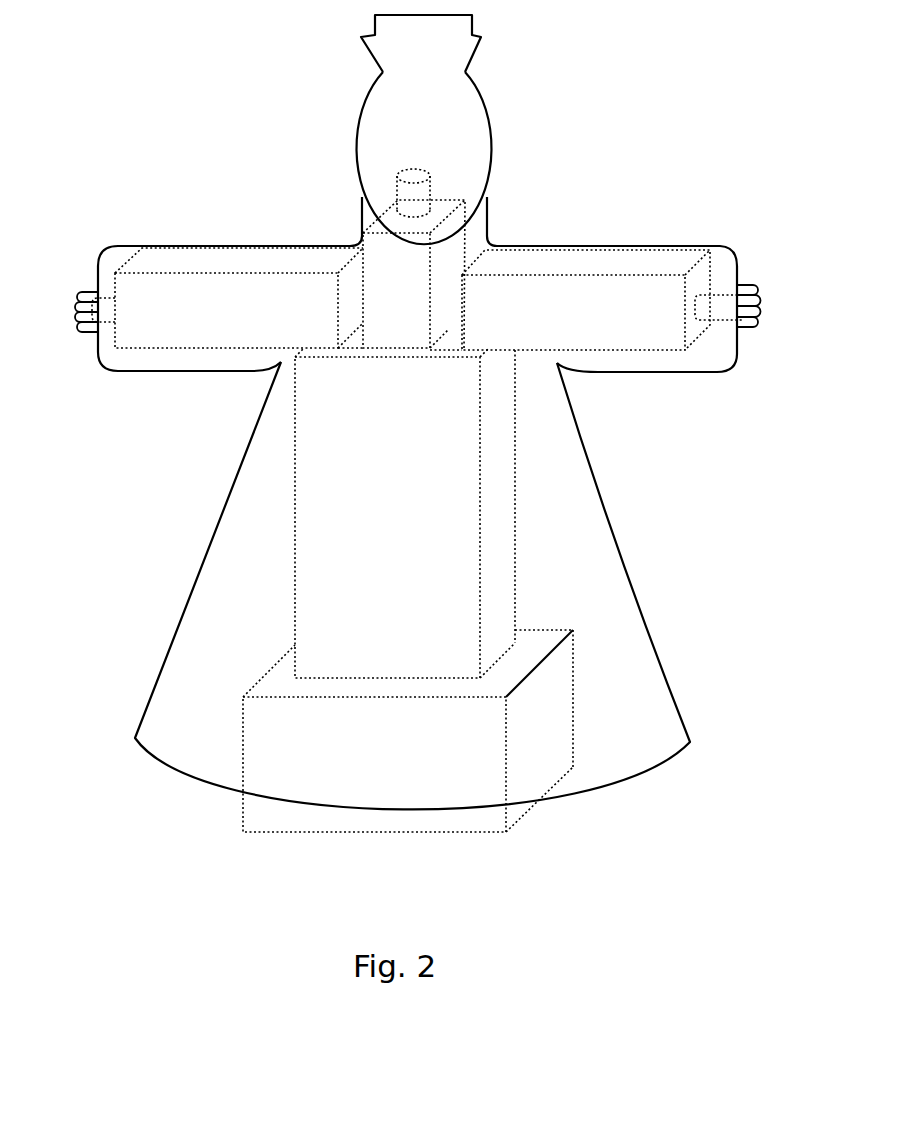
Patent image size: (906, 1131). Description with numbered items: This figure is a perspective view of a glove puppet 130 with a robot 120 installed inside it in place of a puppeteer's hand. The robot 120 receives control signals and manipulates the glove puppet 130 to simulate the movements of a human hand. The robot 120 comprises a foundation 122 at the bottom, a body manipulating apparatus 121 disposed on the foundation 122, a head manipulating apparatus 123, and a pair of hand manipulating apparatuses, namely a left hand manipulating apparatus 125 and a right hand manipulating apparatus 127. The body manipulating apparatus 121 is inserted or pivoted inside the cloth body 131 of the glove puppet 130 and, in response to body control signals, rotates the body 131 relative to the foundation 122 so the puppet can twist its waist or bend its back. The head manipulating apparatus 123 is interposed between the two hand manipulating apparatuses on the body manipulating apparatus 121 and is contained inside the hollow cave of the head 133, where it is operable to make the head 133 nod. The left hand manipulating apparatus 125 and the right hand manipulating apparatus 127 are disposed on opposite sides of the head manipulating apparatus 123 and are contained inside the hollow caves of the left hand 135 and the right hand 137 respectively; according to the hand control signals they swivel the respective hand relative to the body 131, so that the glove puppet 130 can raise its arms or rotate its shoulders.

The robot 120 is at (147, 273).
The body manipulating apparatus 121 is at (437, 555).
The foundation 122 is at (508, 813).
The head manipulating apparatus 123 is at (430, 188).
The left hand manipulating apparatus 125 is at (612, 298).
The right hand manipulating apparatus 127 is at (157, 321).
The glove puppet 130 is at (203, 246).
The body 131 is at (583, 496).
The head 133 is at (465, 118).
The left hand 135 is at (762, 307).
The right hand 137 is at (83, 323).